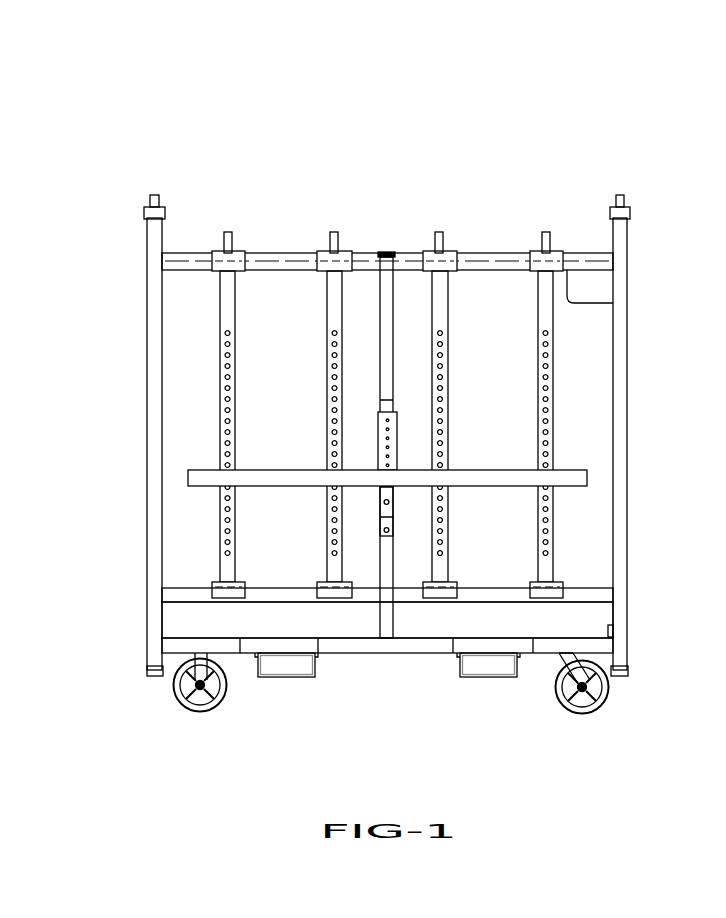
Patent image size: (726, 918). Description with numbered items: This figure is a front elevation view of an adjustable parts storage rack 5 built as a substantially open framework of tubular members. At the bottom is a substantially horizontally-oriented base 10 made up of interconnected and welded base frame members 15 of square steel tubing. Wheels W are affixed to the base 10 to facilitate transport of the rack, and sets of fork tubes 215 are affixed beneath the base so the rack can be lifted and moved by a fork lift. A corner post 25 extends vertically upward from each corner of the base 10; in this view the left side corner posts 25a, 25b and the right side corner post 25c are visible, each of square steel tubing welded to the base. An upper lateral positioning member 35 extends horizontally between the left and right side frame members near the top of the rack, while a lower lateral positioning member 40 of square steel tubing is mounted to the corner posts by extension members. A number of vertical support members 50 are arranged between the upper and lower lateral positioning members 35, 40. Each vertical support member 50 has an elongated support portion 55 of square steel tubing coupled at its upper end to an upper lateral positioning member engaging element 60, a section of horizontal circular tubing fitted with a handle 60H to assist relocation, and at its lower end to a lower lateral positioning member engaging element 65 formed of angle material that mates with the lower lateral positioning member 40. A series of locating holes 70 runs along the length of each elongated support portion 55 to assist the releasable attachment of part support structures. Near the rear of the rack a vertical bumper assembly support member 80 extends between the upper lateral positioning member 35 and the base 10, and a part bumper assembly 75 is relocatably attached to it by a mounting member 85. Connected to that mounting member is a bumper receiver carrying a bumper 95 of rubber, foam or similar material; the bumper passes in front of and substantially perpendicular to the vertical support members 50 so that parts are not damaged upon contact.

The adjustable parts storage rack 5 is at (145, 160).
The base 10 is at (396, 663).
The base frame members 15 is at (183, 645).
The corner post 25 is at (385, 402).
The left side corner post 25a is at (157, 236).
The left side corner post 25b is at (646, 279).
The right side corner post 25c is at (620, 236).
The upper lateral positioning member 35 is at (473, 262).
The lower lateral positioning member 40 is at (584, 592).
The vertical support member 50 is at (327, 320).
The elongated support portion 55 is at (238, 397).
The upper lateral positioning member engaging element 60 is at (232, 262).
The handle 60H is at (333, 240).
The lower lateral positioning member engaging element 65 is at (326, 597).
The locating holes 70 is at (330, 430).
The part bumper assembly 75 is at (400, 459).
The vertical bumper assembly support member 80 is at (386, 323).
The mounting member 85 is at (388, 436).
The bumper 95 is at (562, 480).
The fork tubes 215 is at (280, 676).
The wheels W is at (565, 695).